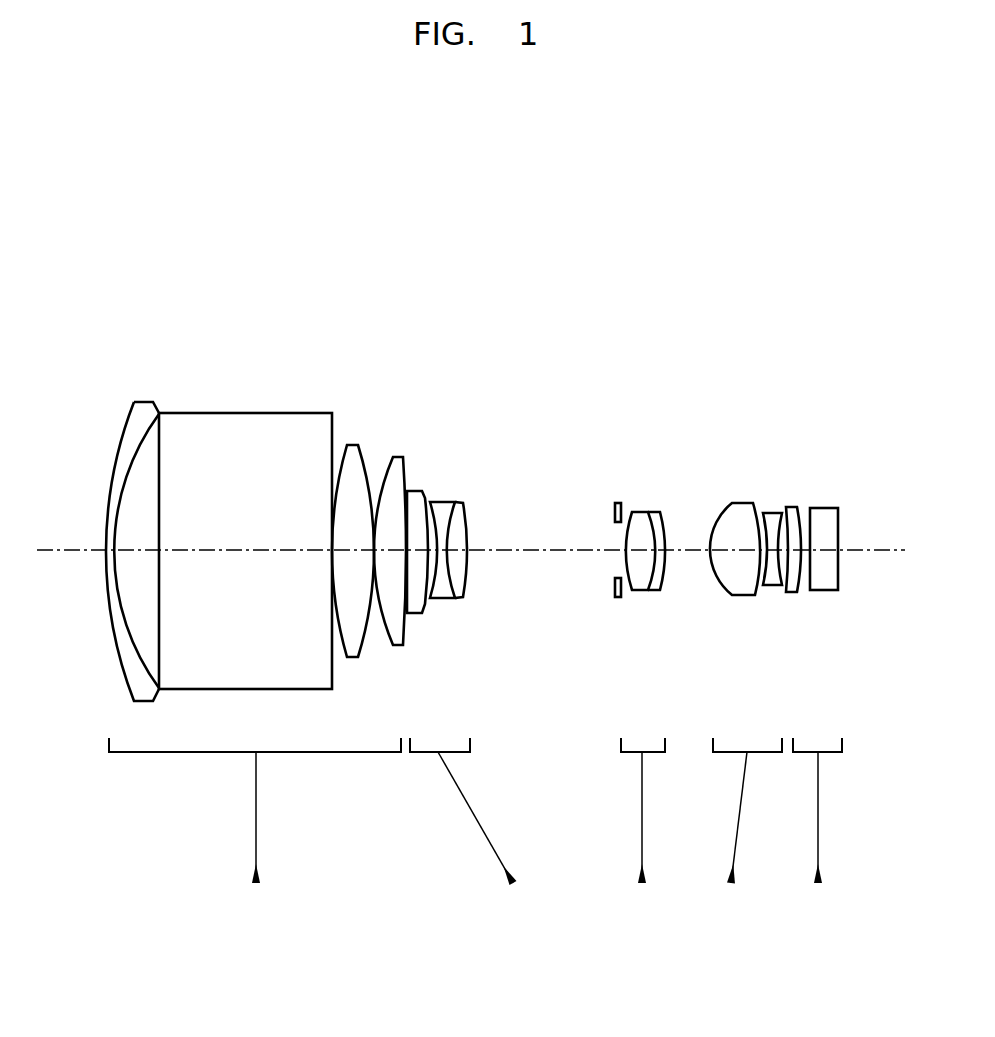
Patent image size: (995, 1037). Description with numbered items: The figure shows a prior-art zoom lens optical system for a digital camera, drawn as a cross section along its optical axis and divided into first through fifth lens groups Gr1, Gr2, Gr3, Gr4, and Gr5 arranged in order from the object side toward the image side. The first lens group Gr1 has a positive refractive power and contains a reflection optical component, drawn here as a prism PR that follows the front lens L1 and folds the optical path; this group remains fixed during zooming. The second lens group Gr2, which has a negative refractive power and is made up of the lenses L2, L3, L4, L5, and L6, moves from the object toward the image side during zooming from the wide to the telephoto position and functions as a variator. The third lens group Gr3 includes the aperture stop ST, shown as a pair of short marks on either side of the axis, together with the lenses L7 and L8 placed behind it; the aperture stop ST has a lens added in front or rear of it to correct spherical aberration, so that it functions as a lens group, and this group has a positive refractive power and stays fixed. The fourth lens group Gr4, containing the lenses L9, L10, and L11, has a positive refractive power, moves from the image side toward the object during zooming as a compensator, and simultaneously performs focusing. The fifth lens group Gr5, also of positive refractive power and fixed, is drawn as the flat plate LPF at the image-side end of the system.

The first lens L1 is at (133, 420).
The prism PR is at (183, 452).
The second lens L2 is at (353, 467).
The third lens L3 is at (393, 485).
The fourth lens L4 is at (414, 503).
The fifth lens L5 is at (444, 508).
The sixth lens L6 is at (465, 507).
The aperture stop ST is at (620, 513).
The seventh lens L7 is at (639, 518).
The eighth lens L8 is at (656, 517).
The ninth lens L9 is at (735, 518).
The tenth lens L10 is at (772, 517).
The eleventh lens L11 is at (790, 517).
The low pass filter LPF is at (827, 518).
The first lens group Gr1 is at (255, 810).
The second lens group Gr2 is at (461, 810).
The third lens group Gr3 is at (653, 810).
The fourth lens group Gr4 is at (751, 810).
The fifth lens group Gr5 is at (826, 810).